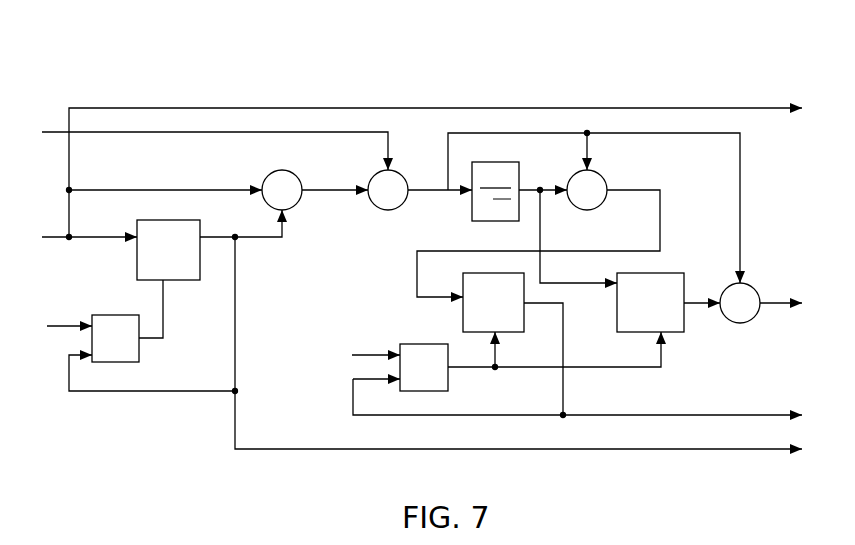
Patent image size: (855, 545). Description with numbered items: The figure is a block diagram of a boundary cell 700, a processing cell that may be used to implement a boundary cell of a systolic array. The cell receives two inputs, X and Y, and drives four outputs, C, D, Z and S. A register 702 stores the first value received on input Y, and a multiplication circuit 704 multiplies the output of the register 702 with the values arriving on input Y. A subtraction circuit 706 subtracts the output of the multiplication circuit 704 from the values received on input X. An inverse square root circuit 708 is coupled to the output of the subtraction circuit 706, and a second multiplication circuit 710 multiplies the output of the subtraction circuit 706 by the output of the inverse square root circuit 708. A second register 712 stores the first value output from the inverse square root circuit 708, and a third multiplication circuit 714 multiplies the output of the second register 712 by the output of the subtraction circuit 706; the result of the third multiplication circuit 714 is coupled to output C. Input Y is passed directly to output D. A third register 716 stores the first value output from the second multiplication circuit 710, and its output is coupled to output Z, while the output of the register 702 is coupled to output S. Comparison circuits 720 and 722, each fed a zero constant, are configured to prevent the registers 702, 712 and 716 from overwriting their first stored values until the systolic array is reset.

The boundary cell 700 is at (419, 241).
The register 702 is at (177, 275).
The multiplication circuit 704 is at (257, 180).
The subtraction circuit 706 is at (404, 162).
The inverse square root circuit 708 is at (522, 183).
The second multiplication circuit 710 is at (612, 182).
The second register 712 is at (674, 331).
The third multiplication circuit 714 is at (761, 330).
The third register 716 is at (438, 302).
The comparison circuit 720 is at (154, 345).
The comparison circuit 722 is at (455, 374).